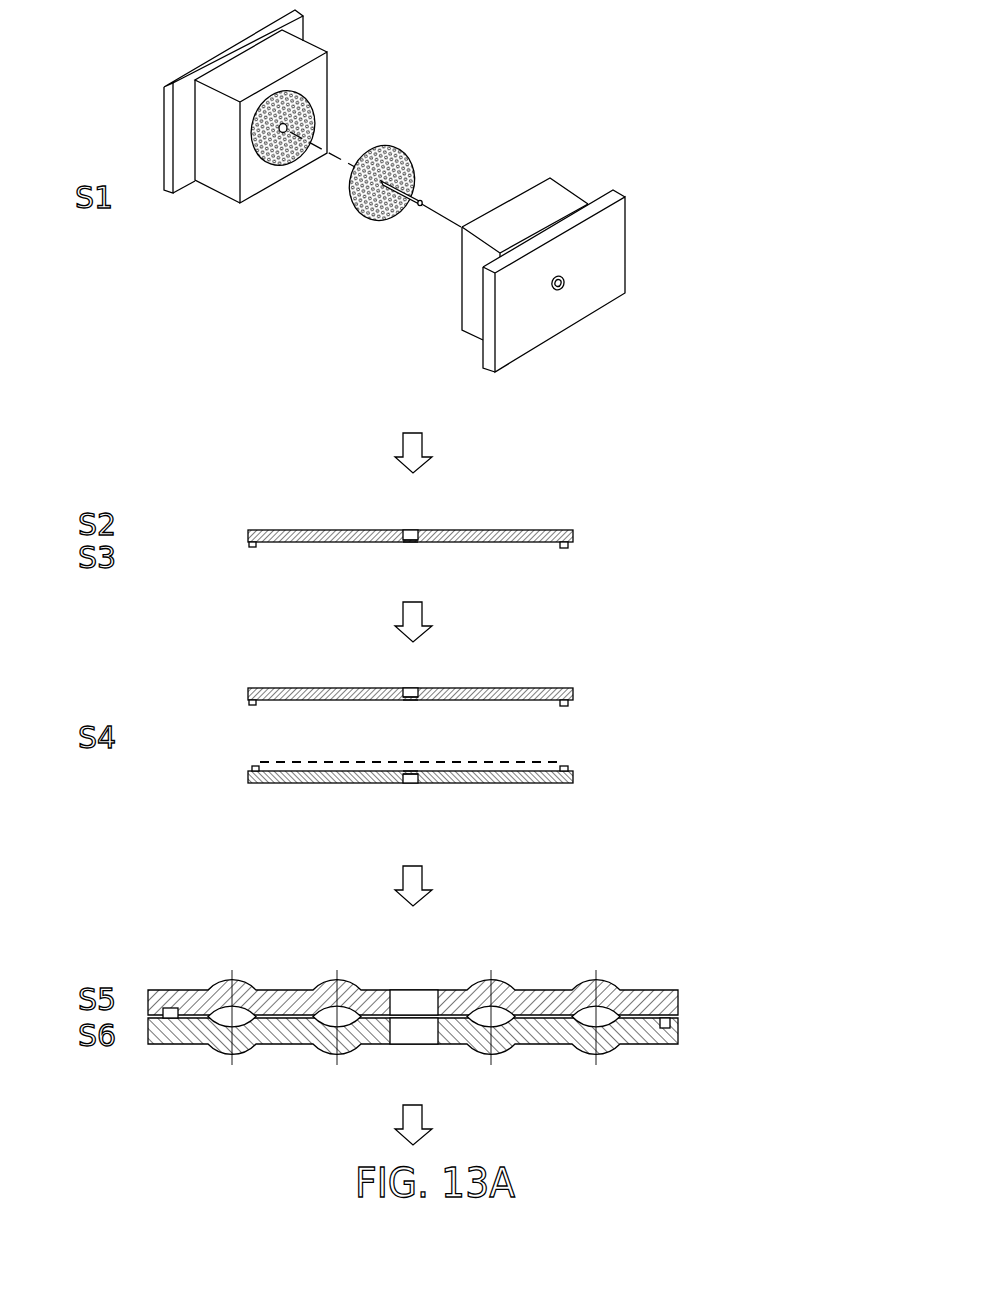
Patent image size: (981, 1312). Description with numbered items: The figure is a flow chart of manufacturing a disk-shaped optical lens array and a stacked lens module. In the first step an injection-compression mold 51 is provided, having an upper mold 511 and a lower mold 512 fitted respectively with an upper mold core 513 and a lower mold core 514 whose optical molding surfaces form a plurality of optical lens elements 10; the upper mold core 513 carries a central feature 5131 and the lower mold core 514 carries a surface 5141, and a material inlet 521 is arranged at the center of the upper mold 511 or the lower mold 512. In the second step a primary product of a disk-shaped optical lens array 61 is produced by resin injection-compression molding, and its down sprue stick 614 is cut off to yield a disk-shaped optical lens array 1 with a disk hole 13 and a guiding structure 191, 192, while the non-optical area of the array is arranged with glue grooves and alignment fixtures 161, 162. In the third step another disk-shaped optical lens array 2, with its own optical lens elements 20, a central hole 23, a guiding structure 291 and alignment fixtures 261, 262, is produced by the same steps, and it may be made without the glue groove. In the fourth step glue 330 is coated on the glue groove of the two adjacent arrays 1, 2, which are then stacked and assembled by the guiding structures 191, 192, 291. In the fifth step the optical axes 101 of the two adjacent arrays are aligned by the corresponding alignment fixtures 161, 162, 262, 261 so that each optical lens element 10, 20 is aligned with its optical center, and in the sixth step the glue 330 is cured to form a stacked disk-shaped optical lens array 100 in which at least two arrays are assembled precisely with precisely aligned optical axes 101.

The injection-compression mold 51 is at (527, 100).
The upper mold 511 is at (303, 58).
The upper mold core 513 is at (315, 106).
The center hole 5131 is at (275, 157).
The primary product of a disk-shaped optical lens array 61 is at (353, 212).
The down sprue stick 614 is at (403, 213).
The lower mold core 514 is at (525, 188).
The top surface of second mold 5141 is at (508, 198).
The lower mold 512 is at (552, 197).
The material inlet 521 is at (565, 287).
The disk-shaped optical lens array 1 is at (573, 532).
The optical lens element 10 is at (512, 531).
The disk hole 13 is at (412, 531).
The guiding structure 191 is at (415, 543).
The guiding structure 192 is at (447, 621).
The alignment fixture 161 is at (567, 548).
The alignment fixture 162 is at (250, 697).
The disk-shaped optical lens array 2 is at (573, 782).
The optical lens element 20 is at (483, 783).
The second recess 23 is at (410, 780).
The guiding structure 291 is at (418, 773).
The alignment fixture 261 is at (250, 768).
The alignment fixture 262 is at (568, 772).
The glue 330 is at (275, 760).
The stacked disk-shaped optical lens array 100 is at (720, 925).
The optical axis 101 is at (414, 1005).